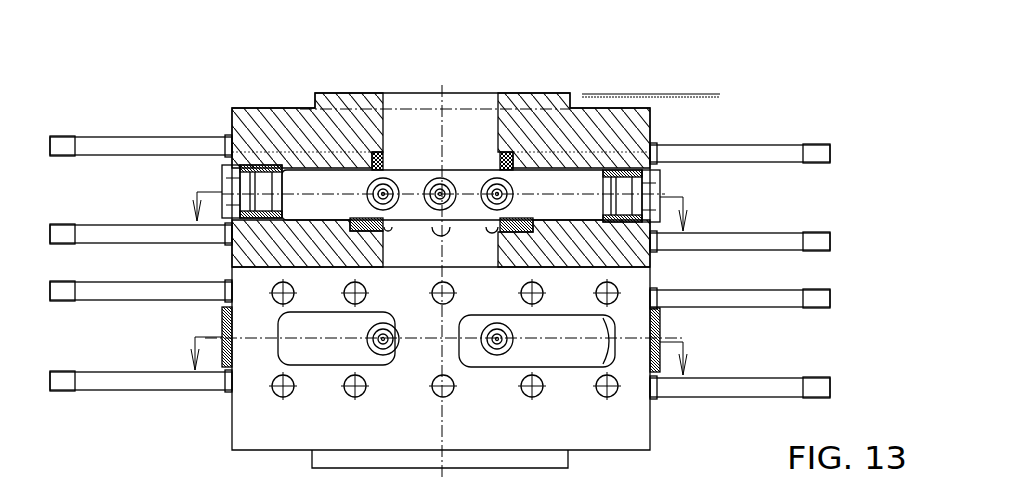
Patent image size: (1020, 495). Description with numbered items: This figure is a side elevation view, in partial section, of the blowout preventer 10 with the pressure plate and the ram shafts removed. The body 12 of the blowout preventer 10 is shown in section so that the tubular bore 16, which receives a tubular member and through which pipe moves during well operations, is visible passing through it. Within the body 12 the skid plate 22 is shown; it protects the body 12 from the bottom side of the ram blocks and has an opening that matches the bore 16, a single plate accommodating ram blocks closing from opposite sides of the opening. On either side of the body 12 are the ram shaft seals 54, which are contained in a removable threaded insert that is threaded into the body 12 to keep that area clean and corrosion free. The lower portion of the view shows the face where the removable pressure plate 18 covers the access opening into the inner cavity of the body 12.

The blowout preventer 10 is at (440, 253).
The body 12 is at (533, 97).
The tubular bore 16 is at (460, 95).
The pressure plate 18 is at (620, 402).
The skid plate 22 is at (408, 223).
The ram shaft seals 54 is at (230, 188).